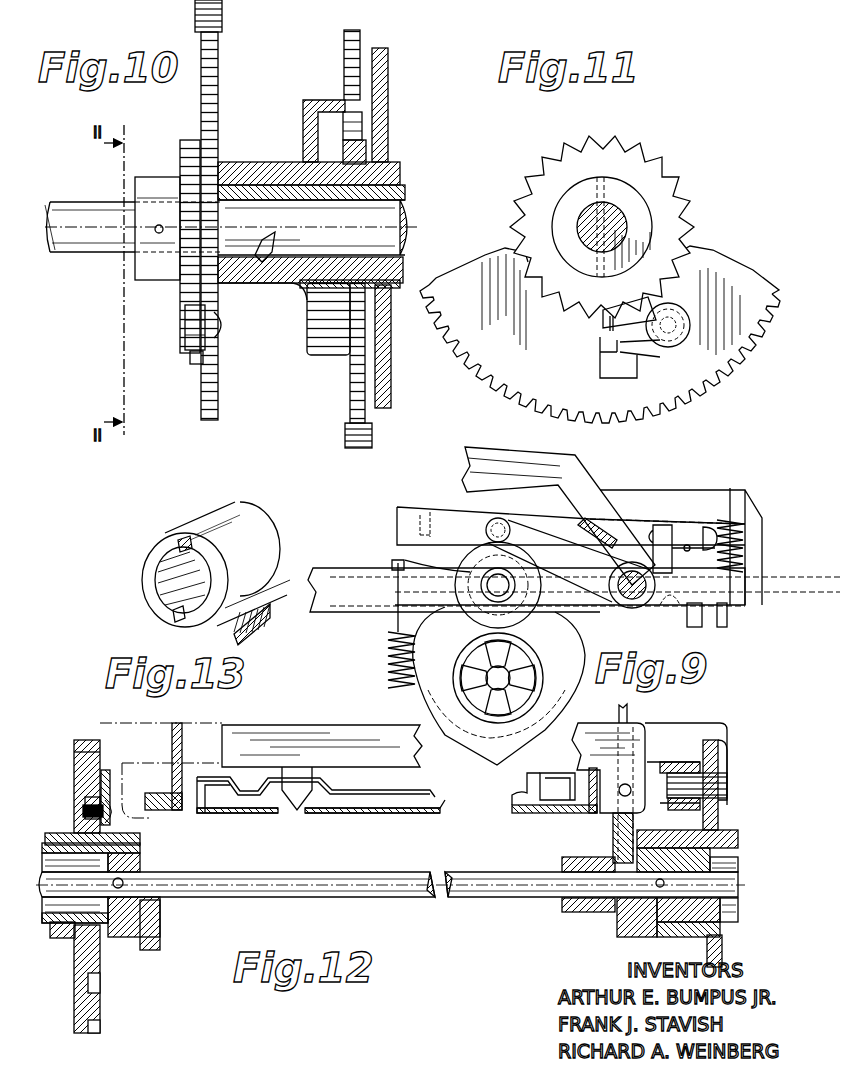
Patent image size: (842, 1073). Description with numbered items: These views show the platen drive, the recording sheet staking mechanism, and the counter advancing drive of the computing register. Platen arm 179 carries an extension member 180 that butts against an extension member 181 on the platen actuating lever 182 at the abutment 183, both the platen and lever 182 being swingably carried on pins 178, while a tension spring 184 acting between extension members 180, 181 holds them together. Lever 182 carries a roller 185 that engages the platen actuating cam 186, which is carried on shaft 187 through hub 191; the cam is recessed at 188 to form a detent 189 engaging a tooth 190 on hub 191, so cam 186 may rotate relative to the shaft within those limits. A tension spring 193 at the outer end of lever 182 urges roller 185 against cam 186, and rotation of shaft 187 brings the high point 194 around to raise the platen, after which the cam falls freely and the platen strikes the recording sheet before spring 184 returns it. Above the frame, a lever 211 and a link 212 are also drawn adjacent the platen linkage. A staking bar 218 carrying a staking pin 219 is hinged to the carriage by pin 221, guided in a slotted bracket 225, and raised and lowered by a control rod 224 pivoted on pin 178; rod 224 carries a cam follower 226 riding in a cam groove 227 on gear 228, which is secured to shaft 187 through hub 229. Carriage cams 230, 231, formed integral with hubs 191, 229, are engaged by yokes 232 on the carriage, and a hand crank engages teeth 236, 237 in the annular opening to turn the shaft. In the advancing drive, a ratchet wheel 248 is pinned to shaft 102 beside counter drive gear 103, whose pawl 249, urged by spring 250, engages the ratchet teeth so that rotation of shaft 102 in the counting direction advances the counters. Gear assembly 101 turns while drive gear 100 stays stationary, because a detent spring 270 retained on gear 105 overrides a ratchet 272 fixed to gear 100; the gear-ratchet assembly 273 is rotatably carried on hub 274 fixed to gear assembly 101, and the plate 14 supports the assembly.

In FIG. 10, the frame plate 14 is at (374, 123).
In FIG. 10, the drive gear 100 is at (392, 390).
In FIG. 10, the gear assembly 101 is at (278, 303).
In FIG. 10, the shaft 102 is at (78, 206).
In FIG. 10, the counter drive gear 103 is at (218, 76).
In FIG. 11, the counter drive gear 103 is at (720, 350).
In FIG. 10, the gear 105 is at (350, 396).
In FIG. 9, the pins 178 is at (652, 604).
In FIG. 9, the platen arm 179 is at (588, 470).
In FIG. 9, the extension member 180 is at (742, 493).
In FIG. 9, the extension member 181 is at (745, 600).
In FIG. 9, the platen actuating lever 182 is at (382, 566).
In FIG. 9, the abutment 183 is at (689, 545).
In FIG. 9, the tension spring 184 is at (745, 548).
In FIG. 9, the roller 185 is at (600, 598).
In FIG. 12, the roller 185 is at (720, 831).
In FIG. 9, the platen actuating cam 186 is at (544, 712).
In FIG. 13, the platen actuating cam 186 is at (255, 530).
In FIG. 12, the platen actuating cam 186 is at (722, 940).
In FIG. 12, the shaft 187 is at (513, 882).
In FIG. 13, the recess 188 is at (175, 607).
In FIG. 13, the detent 189 is at (184, 543).
In FIG. 12, the tooth 190 is at (657, 925).
In FIG. 12, the hub 191 is at (598, 910).
In FIG. 9, the tension spring 193 is at (388, 645).
In FIG. 9, the high point 194 is at (497, 761).
In FIG. 13, the high point 194 is at (240, 630).
In FIG. 12, the high point 194 is at (712, 966).
In FIG. 9, the lever 211 is at (452, 507).
In FIG. 9, the link 212 is at (450, 547).
In FIG. 12, the staking bar 218 is at (250, 735).
In FIG. 12, the staking pin 219 is at (302, 781).
In FIG. 12, the pin 221 is at (621, 794).
In FIG. 12, the control rod 224 is at (103, 815).
In FIG. 12, the slotted bracket 225 is at (178, 723).
In FIG. 12, the cam follower 226 is at (87, 800).
In FIG. 12, the cam groove 227 is at (82, 813).
In FIG. 12, the gear 228 is at (76, 1003).
In FIG. 12, the hub 229 is at (182, 905).
In FIG. 9, the cam 230 is at (435, 700).
In FIG. 12, the cam 230 is at (617, 936).
In FIG. 12, the cam 231 is at (150, 951).
In FIG. 12, the yoke 232 is at (613, 833).
In FIG. 12, the tooth 236 is at (70, 936).
In FIG. 12, the tooth 237 is at (48, 830).
In FIG. 10, the ratchet wheel 248 is at (183, 166).
In FIG. 11, the ratchet wheel 248 is at (528, 195).
In FIG. 10, the pawl 249 is at (186, 313).
In FIG. 11, the pawl 249 is at (605, 318).
In FIG. 10, the spring 250 is at (197, 362).
In FIG. 11, the spring 250 is at (640, 350).
In FIG. 10, the detent spring 270 is at (345, 118).
In FIG. 10, the ratchet 272 is at (362, 152).
In FIG. 10, the gear-ratchet assembly 273 is at (348, 182).
In FIG. 10, the hub 274 is at (283, 195).